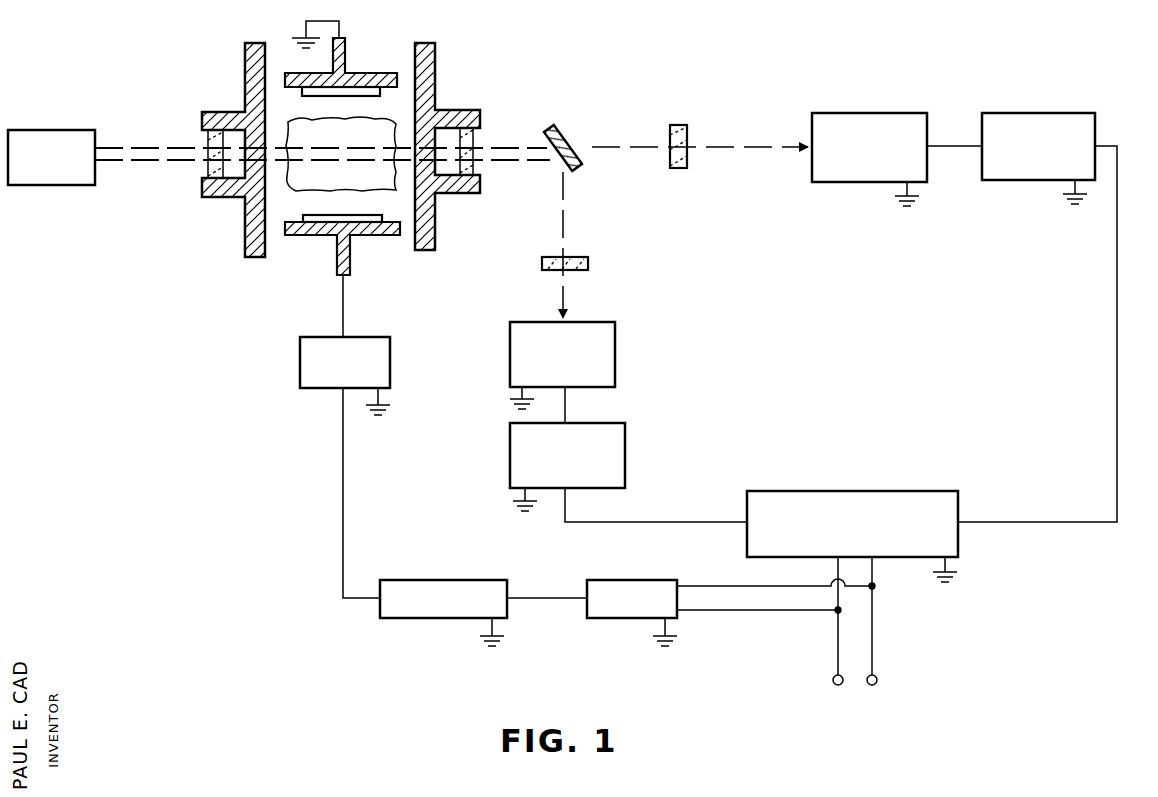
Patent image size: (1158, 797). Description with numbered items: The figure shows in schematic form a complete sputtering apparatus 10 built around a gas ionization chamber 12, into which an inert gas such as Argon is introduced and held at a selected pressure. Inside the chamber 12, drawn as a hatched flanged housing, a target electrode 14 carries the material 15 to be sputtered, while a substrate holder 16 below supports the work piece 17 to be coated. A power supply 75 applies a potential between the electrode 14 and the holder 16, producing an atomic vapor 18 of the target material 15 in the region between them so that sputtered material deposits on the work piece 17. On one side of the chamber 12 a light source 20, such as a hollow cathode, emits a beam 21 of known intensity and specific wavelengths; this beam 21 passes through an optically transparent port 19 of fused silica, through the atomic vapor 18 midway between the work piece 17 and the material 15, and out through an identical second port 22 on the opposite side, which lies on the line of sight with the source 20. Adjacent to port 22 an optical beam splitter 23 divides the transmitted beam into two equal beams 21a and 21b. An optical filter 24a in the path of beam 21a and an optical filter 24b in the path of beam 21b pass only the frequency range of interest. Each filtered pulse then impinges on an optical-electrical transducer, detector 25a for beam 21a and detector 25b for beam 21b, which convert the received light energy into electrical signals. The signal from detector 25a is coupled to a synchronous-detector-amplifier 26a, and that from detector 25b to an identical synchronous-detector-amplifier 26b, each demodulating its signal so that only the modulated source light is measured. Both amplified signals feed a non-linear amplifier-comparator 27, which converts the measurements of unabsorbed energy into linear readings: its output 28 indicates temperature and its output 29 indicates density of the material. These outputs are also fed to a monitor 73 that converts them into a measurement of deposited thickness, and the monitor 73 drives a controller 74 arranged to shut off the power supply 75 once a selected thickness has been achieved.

The sputtering apparatus 10 is at (505, 49).
The gas ionization chamber 12 is at (427, 97).
The target electrode 14 is at (344, 46).
The material to be sputtered 15 is at (368, 96).
The substrate holder 16 is at (350, 268).
The work piece 17 is at (366, 215).
The atomic vapor 18 is at (317, 180).
The optically transparent port 19 is at (208, 168).
The light source 20 is at (78, 130).
The light beam 21 is at (134, 148).
The first split beam 21a is at (617, 147).
The second split beam 21b is at (565, 205).
The second port 22 is at (478, 135).
The optical beam splitter 23 is at (565, 128).
The optical filter 24a is at (680, 125).
The optical filter 24b is at (580, 257).
The detector 25a is at (884, 113).
The detector 25b is at (617, 330).
The synchronous-detector-amplifier 26a is at (1043, 113).
The synchronous-detector-amplifier 26b is at (627, 435).
The non-linear amplifier-comparator 27 is at (899, 491).
The temperature output 28 is at (834, 676).
The density output 29 is at (874, 617).
The monitor 73 is at (620, 580).
The controller 74 is at (442, 580).
The power supply 75 is at (367, 337).